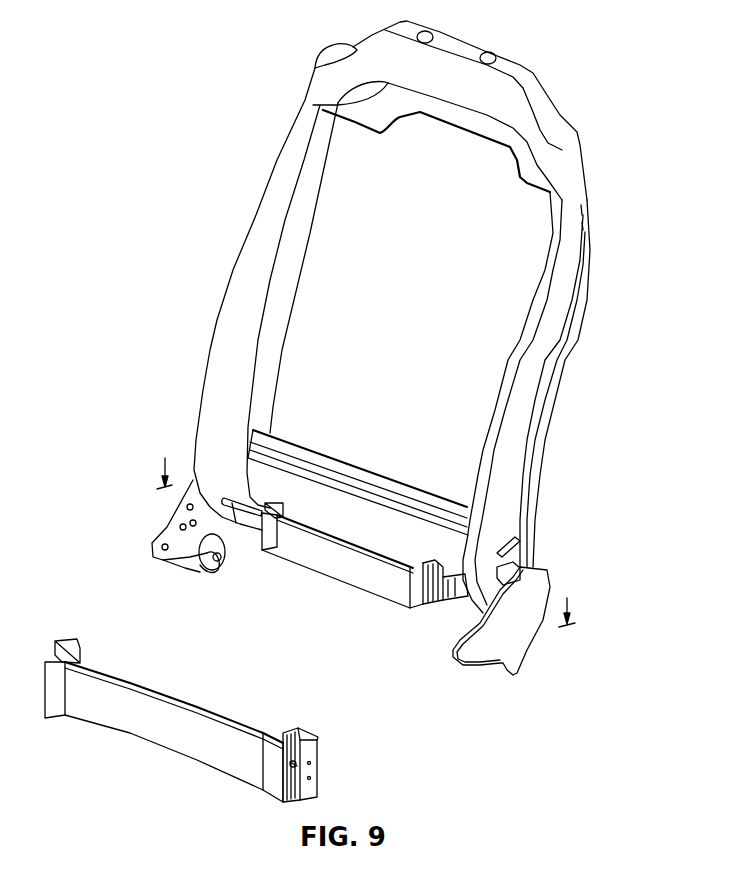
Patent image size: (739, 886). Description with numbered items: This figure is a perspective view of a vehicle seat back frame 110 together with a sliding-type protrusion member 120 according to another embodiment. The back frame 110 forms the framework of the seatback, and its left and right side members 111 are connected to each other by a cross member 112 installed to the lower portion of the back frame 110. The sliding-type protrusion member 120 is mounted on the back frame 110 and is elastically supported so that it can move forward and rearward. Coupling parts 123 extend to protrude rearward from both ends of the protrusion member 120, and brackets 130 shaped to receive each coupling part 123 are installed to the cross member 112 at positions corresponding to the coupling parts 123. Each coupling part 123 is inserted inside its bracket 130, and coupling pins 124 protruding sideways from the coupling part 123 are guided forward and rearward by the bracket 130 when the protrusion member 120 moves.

The back frame 110 is at (399, 348).
The side member 111 is at (512, 508).
The cross member 112 is at (240, 537).
The sliding-type protrusion member 120 is at (256, 652).
The coupling part 123 is at (287, 743).
The coupling pin 124 is at (313, 770).
The bracket 130 is at (308, 748).